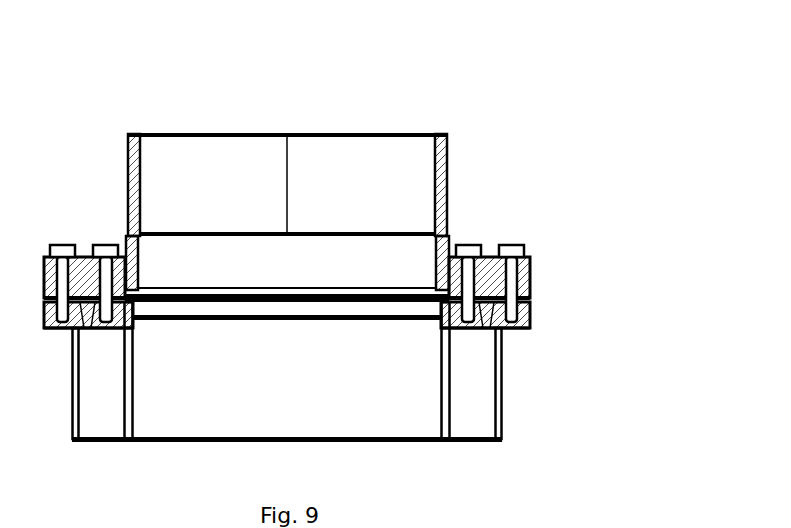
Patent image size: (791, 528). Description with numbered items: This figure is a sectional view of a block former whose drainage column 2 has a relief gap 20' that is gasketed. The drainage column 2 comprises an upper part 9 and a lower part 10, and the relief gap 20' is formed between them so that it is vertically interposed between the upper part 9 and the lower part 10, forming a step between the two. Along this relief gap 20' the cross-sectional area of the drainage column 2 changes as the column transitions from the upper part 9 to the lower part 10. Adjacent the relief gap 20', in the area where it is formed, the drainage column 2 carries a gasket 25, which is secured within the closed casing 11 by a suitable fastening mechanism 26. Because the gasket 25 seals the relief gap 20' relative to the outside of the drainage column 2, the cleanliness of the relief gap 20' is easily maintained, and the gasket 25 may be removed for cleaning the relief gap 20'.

The drainage column 2 is at (253, 117).
The upper part 9 is at (167, 170).
The relief gap 20' is at (248, 249).
The gasket 25 is at (530, 257).
The fastening mechanism 26 is at (512, 248).
The lower part 10 is at (202, 412).
The closed casing 11 is at (478, 403).